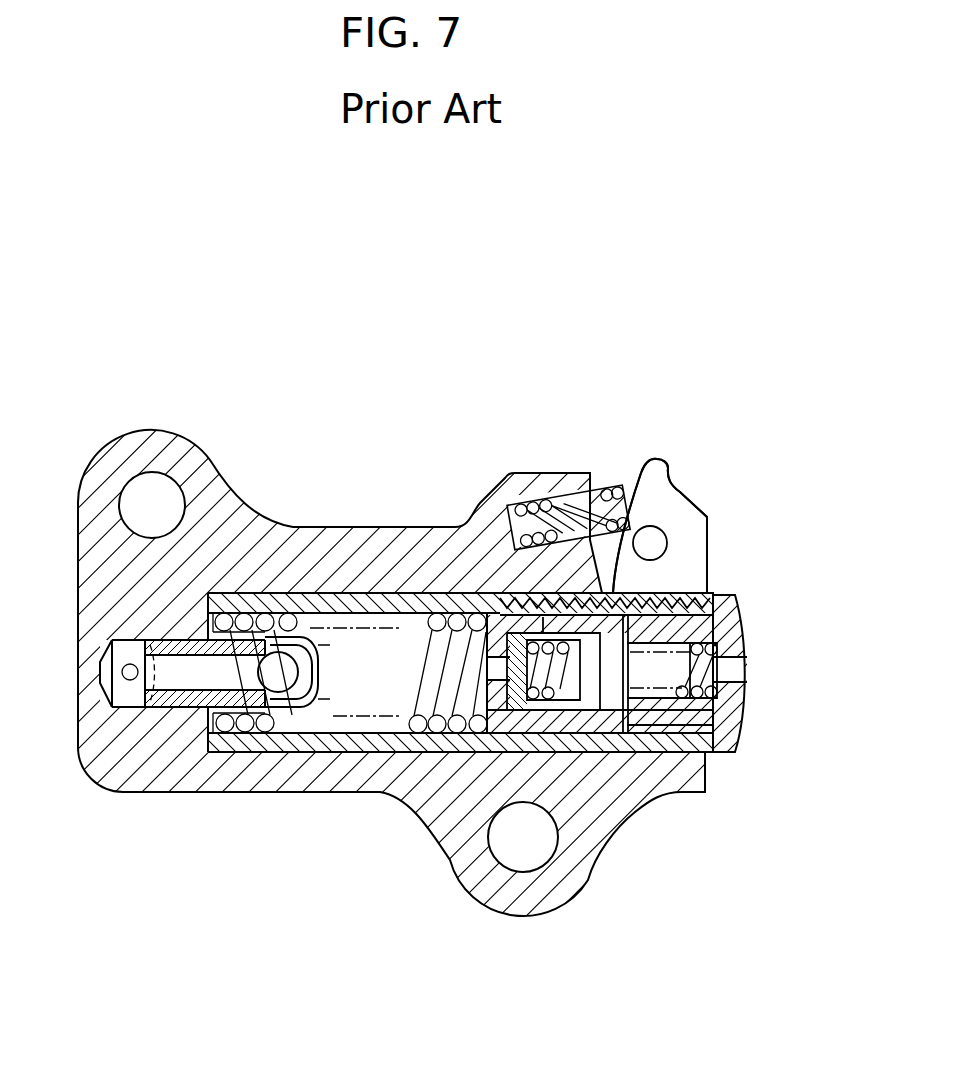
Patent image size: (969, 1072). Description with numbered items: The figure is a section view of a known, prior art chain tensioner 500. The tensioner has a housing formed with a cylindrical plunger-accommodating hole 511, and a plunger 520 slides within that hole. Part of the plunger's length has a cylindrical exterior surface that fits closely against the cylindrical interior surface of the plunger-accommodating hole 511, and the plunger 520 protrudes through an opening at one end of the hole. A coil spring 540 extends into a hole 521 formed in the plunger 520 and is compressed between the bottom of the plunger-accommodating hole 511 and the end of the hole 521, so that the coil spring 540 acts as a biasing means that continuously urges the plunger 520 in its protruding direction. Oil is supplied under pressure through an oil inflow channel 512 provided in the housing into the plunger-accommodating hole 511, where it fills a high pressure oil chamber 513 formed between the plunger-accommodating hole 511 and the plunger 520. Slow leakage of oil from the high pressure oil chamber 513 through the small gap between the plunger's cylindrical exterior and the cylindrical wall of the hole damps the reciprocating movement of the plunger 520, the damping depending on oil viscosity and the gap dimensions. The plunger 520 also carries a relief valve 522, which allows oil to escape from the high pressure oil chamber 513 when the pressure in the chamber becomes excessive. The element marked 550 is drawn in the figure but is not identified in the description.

The chain tensioner 500 is at (671, 358).
The plunger-accommodating hole 511 is at (280, 600).
The oil inflow channel 512 is at (148, 710).
The high pressure oil chamber 513 is at (327, 683).
The plunger 520 is at (640, 753).
The hole 521 is at (333, 727).
The relief valve 522 is at (518, 687).
The coil spring 540 is at (427, 680).
The check valve ball 550 is at (273, 670).